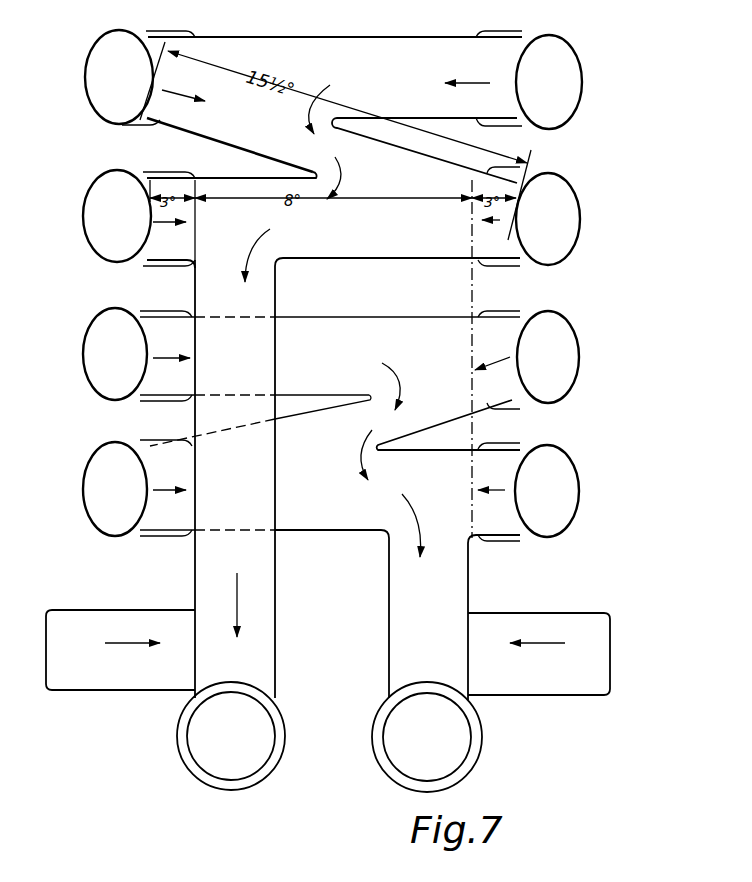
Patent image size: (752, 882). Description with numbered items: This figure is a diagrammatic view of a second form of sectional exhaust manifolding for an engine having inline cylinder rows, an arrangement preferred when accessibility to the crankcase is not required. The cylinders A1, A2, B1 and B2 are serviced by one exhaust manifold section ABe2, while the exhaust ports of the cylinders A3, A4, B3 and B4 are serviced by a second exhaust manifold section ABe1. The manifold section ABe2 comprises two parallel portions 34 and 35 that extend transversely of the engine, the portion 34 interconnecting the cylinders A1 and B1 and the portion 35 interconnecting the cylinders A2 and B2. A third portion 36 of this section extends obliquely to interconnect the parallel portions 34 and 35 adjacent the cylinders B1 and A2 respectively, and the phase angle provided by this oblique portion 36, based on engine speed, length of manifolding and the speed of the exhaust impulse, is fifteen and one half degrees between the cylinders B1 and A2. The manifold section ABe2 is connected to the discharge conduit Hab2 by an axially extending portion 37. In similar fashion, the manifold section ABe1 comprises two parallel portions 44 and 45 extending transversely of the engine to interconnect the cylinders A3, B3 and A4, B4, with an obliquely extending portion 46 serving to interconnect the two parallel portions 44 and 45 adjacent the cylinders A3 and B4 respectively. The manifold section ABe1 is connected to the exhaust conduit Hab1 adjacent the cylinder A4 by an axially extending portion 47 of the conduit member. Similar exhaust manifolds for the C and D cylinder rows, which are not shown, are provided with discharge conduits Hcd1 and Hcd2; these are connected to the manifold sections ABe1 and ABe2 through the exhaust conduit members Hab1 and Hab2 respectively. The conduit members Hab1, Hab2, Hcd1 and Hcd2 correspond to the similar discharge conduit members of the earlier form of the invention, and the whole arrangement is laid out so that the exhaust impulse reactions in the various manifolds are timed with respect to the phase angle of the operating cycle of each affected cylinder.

The parallel portion 34 is at (403, 58).
The parallel portion 35 is at (456, 238).
The third portion 36 is at (262, 135).
The axially extending portion 37 is at (220, 417).
The parallel portion 44 is at (330, 340).
The parallel portion 45 is at (331, 510).
The obliquely extending portion 46 is at (440, 402).
The axially extending portion 47 is at (458, 600).
The cylinder A1 is at (566, 82).
The cylinder A2 is at (566, 229).
The cylinder A3 is at (566, 364).
The cylinder A4 is at (566, 492).
The cylinder B1 is at (92, 73).
The cylinder B2 is at (90, 218).
The cylinder B3 is at (88, 352).
The cylinder B4 is at (85, 486).
The exhaust manifold section ABe1 is at (392, 524).
The exhaust manifold section ABe2 is at (427, 252).
The exhaust conduit member Hab1 is at (410, 673).
The exhaust conduit member Hab2 is at (258, 666).
The discharge conduit Hcd1 is at (518, 630).
The discharge conduit Hcd2 is at (145, 623).